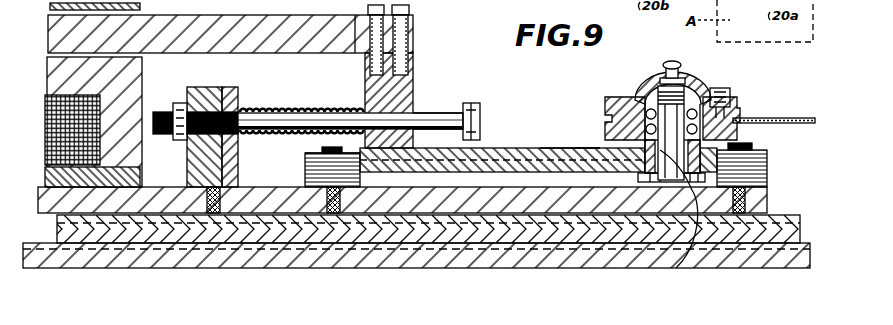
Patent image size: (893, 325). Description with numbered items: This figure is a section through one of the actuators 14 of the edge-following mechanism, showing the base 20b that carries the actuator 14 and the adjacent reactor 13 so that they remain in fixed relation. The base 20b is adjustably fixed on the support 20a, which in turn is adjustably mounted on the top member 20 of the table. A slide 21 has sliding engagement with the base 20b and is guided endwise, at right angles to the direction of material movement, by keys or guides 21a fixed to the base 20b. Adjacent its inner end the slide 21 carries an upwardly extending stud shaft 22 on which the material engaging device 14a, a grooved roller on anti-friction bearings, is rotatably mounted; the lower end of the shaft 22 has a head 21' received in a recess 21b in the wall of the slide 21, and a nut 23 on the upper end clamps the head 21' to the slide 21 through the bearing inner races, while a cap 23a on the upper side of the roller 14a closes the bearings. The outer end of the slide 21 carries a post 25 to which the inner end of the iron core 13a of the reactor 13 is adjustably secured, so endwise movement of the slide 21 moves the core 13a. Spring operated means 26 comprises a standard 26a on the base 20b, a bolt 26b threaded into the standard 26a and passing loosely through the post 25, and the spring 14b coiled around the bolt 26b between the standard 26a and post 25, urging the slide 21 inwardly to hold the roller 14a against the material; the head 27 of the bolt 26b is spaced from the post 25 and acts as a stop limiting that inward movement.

The reactor 13 is at (138, 92).
The iron core 13a is at (196, 53).
The actuator 14 is at (538, 141).
The material engaging device 14a is at (731, 107).
The spring 14b is at (305, 108).
The top member 20 is at (446, 268).
The support 20a is at (805, 213).
The base 20b is at (768, 187).
The slide 21 is at (570, 138).
The keys or guides 21a is at (305, 170).
The recess 21b is at (583, 148).
The head 21' is at (681, 226).
The stud shaft 22 is at (640, 175).
The nut 23 is at (690, 100).
The cap 23a is at (645, 97).
The post 25 is at (405, 73).
The spring operated means 26 is at (358, 96).
The standard 26a is at (238, 151).
The bolt 26b is at (432, 117).
The head 27 is at (483, 118).